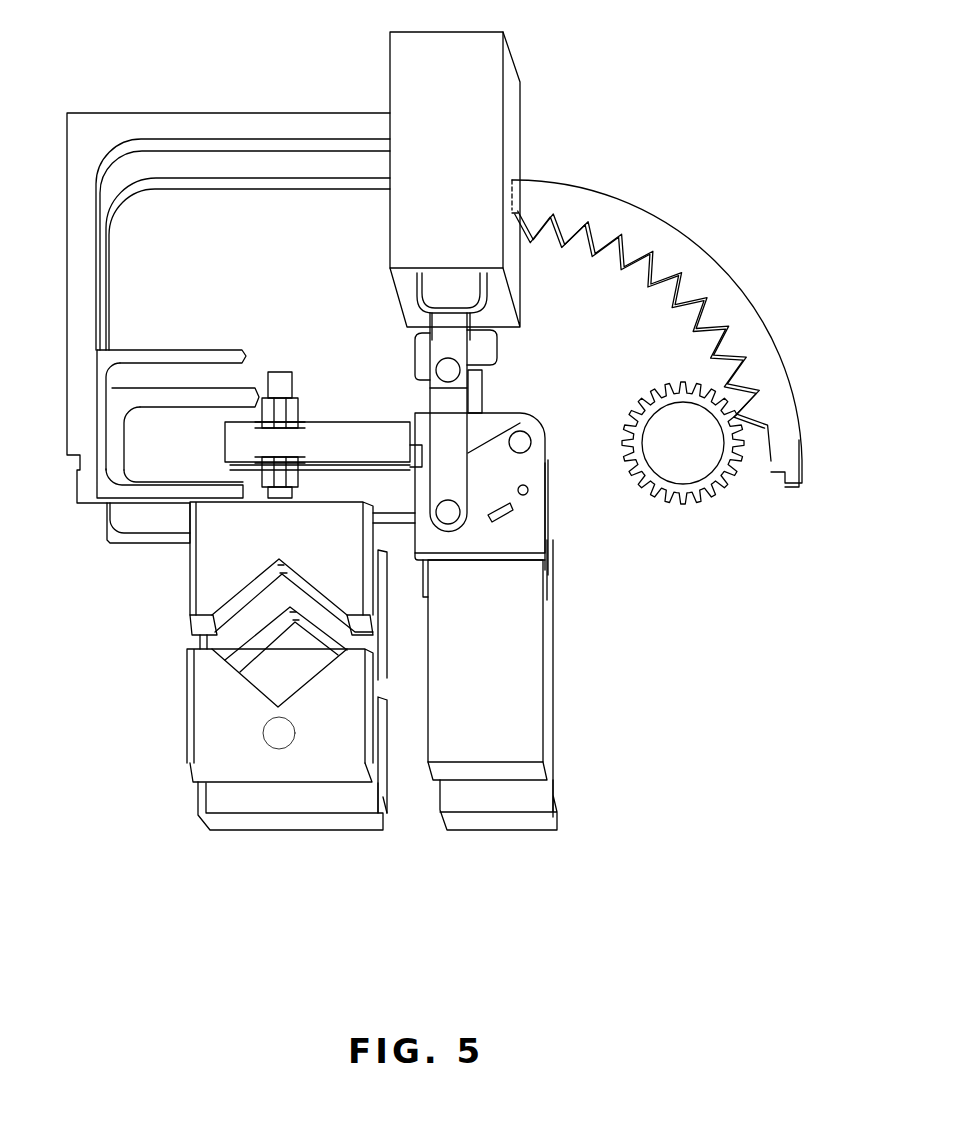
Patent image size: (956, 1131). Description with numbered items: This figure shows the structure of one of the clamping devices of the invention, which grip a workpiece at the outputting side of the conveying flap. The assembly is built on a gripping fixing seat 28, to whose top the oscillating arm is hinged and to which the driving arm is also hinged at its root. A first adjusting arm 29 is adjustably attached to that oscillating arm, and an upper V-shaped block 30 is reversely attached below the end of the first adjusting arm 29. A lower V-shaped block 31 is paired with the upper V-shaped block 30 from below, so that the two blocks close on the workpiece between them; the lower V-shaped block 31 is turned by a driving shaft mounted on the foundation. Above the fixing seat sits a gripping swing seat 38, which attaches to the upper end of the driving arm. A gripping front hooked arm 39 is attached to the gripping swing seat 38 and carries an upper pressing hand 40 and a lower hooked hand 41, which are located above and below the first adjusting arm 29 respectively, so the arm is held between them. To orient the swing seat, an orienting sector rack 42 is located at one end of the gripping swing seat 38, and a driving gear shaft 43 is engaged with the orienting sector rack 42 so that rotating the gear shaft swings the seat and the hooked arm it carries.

The gripping fixing seat 28 is at (510, 592).
The first adjusting arm 29 is at (355, 440).
The upper V-shaped block 30 is at (233, 563).
The lower V-shaped block 31 is at (215, 698).
The gripping swing seat 38 is at (468, 98).
The gripping front hooked arm 39 is at (86, 152).
The upper pressing hand 40 is at (115, 353).
The lower hooked hand 41 is at (148, 485).
The orienting sector rack 42 is at (685, 258).
The driving gear shaft 43 is at (670, 437).